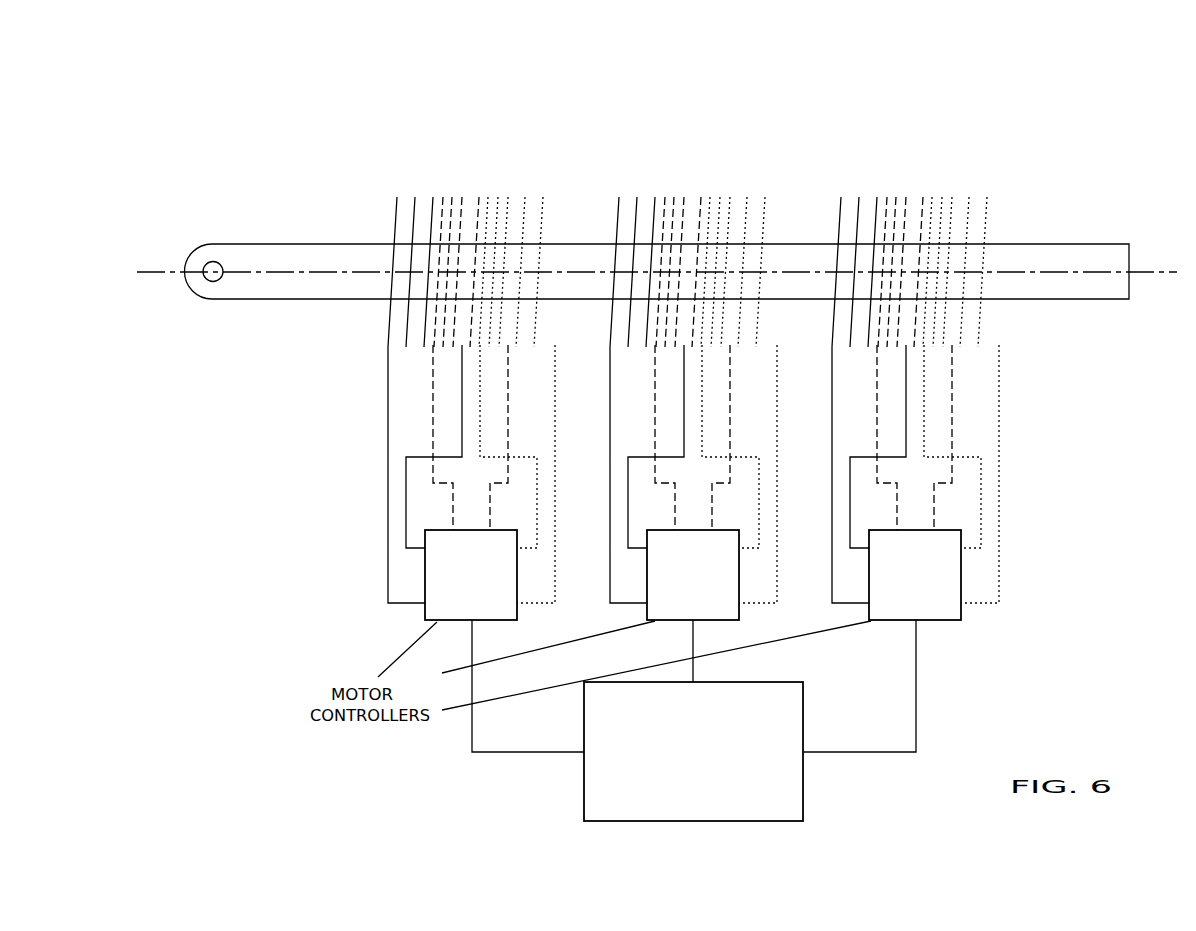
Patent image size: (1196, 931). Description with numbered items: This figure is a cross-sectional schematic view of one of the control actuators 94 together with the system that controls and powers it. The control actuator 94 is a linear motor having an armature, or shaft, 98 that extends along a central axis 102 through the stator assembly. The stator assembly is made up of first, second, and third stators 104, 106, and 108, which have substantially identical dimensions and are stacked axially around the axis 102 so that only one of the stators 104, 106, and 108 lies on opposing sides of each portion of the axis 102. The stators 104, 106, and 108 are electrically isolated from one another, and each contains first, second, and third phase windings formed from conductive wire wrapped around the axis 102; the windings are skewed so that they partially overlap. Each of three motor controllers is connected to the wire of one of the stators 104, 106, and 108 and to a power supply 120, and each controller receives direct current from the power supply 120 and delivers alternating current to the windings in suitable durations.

The control actuator 94 is at (1053, 166).
The armature 98 is at (230, 232).
The central axis 102 is at (1158, 272).
The first stator 104 is at (471, 108).
The second stator 106 is at (693, 108).
The third stator 108 is at (915, 108).
The power supply 120 is at (676, 754).